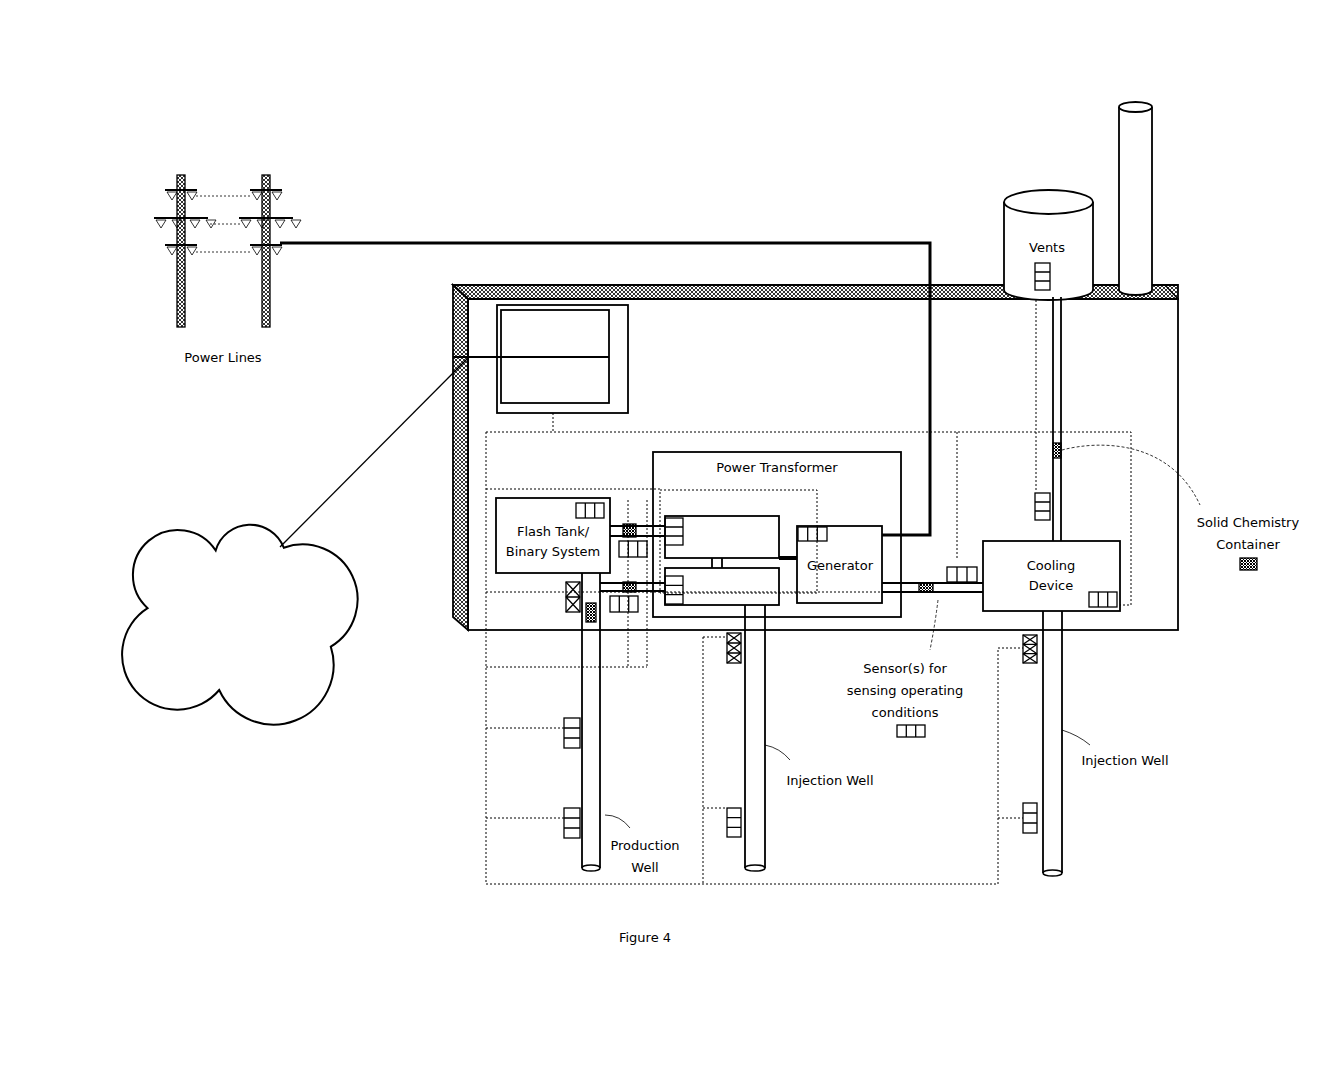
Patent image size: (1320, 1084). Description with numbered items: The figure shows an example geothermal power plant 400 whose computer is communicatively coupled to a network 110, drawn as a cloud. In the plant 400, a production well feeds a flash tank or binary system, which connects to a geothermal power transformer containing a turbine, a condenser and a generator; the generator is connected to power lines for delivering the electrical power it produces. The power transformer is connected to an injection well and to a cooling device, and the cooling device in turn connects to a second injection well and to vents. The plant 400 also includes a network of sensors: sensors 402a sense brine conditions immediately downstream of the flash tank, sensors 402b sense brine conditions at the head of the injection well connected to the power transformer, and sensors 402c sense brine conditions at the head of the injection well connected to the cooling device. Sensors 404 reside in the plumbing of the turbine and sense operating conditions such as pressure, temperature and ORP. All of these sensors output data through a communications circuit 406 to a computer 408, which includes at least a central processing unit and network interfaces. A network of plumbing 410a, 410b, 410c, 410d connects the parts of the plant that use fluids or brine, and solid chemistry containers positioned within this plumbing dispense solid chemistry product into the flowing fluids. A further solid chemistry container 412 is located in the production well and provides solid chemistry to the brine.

The network 110 is at (239, 625).
The geothermal power plant 400 is at (815, 457).
The sensors 402a is at (566, 597).
The sensors 402b is at (727, 645).
The sensors 402c is at (1037, 640).
The sensors 404 is at (672, 517).
The communications circuit 406 is at (720, 431).
The computer 408 is at (629, 364).
The plumbing 410a is at (628, 524).
The plumbing 410b is at (628, 582).
The plumbing 410c is at (926, 582).
The plumbing 410d is at (1061, 393).
The solid chemistry container 412 is at (578, 612).